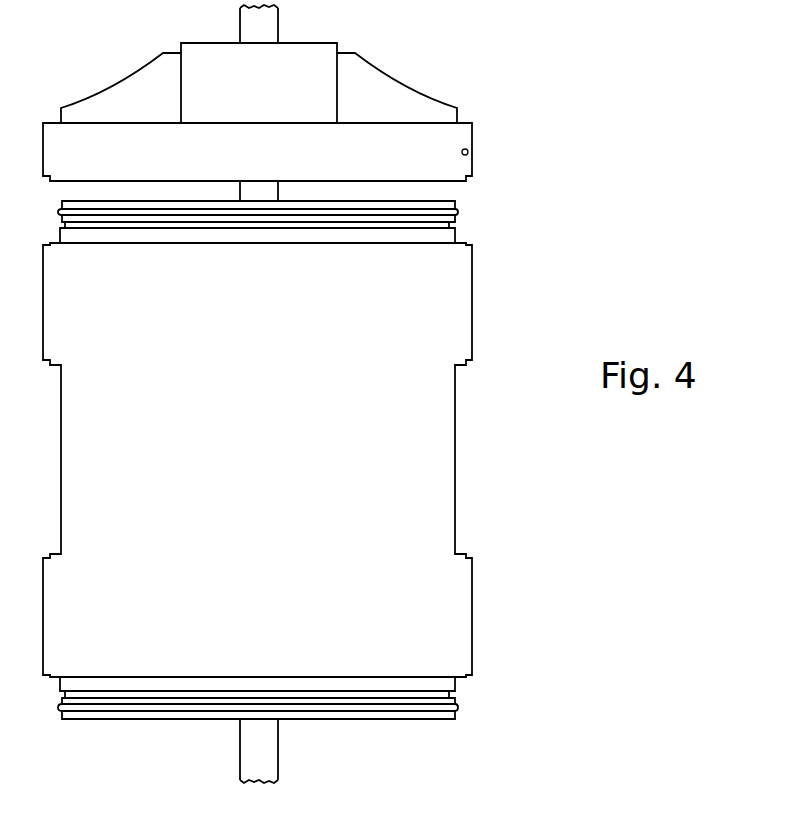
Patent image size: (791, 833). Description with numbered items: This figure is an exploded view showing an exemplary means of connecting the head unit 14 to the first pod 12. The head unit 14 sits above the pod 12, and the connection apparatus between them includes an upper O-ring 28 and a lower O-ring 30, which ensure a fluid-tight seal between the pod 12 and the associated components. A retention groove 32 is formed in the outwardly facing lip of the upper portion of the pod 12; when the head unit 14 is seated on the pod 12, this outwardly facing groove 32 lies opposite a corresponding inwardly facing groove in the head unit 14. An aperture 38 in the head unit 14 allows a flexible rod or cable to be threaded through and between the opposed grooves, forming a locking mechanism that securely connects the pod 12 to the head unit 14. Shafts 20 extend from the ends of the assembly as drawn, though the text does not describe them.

The pod 12 is at (268, 475).
The head unit 14 is at (270, 114).
The shaft 20 is at (270, 31).
The upper O-ring 28 is at (456, 212).
The lower O-ring 30 is at (458, 708).
The retention groove 32 is at (449, 228).
The aperture 38 is at (468, 152).